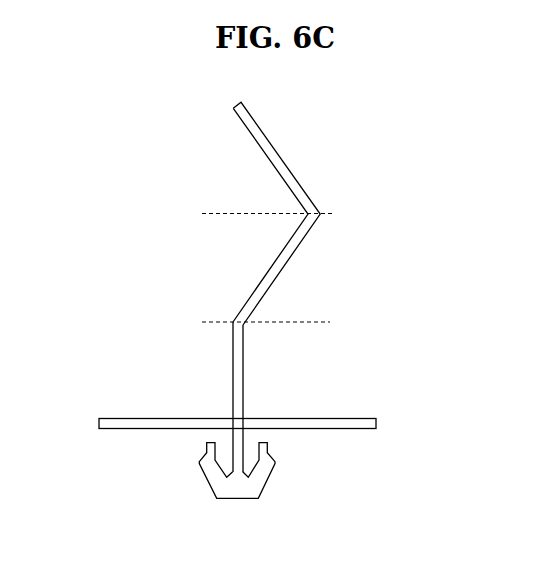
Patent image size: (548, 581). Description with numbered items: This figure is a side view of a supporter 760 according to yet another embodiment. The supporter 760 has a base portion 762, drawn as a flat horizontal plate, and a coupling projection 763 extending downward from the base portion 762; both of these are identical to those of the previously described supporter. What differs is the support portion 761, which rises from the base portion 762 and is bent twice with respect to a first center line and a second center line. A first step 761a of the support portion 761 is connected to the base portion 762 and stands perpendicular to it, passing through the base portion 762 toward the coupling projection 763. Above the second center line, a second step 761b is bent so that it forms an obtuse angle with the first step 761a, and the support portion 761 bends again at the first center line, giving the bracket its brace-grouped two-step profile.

The supporter 760 is at (135, 125).
The support portion 761 is at (343, 287).
The first step 761a is at (320, 397).
The second step 761b is at (300, 196).
The base portion 762 is at (346, 423).
The coupling projection 763 is at (237, 492).